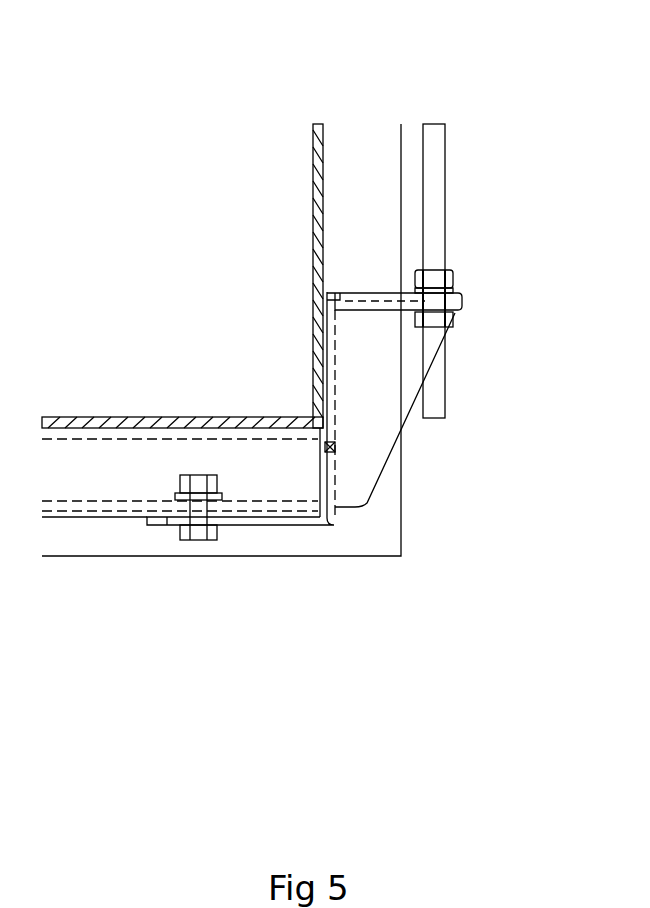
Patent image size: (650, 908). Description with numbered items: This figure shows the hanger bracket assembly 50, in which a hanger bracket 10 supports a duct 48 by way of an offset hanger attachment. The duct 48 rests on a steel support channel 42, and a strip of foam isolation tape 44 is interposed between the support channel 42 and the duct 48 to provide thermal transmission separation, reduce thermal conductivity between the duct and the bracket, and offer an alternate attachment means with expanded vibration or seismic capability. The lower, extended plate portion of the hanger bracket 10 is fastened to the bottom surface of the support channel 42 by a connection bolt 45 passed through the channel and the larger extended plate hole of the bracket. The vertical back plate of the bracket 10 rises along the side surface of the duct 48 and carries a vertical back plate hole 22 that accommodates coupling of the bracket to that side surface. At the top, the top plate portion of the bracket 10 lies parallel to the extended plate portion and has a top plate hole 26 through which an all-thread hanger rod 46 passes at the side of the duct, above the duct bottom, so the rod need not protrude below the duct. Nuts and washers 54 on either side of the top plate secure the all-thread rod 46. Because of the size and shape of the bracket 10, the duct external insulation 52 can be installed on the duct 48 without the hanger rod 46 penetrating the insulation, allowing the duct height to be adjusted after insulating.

The assembly 50 is at (314, 19).
The duct external insulation 52 is at (401, 172).
The duct 48 is at (313, 252).
The foam isolation tape 44 is at (313, 380).
The support channel 42 is at (130, 488).
The vertical back plate hole 22 is at (337, 383).
The top plate hole 26 is at (382, 293).
The all-thread hanger rod 46 is at (446, 157).
The nuts and washers 54 is at (453, 317).
The hanger bracket 10 is at (428, 421).
The connection bolt 45 is at (220, 540).